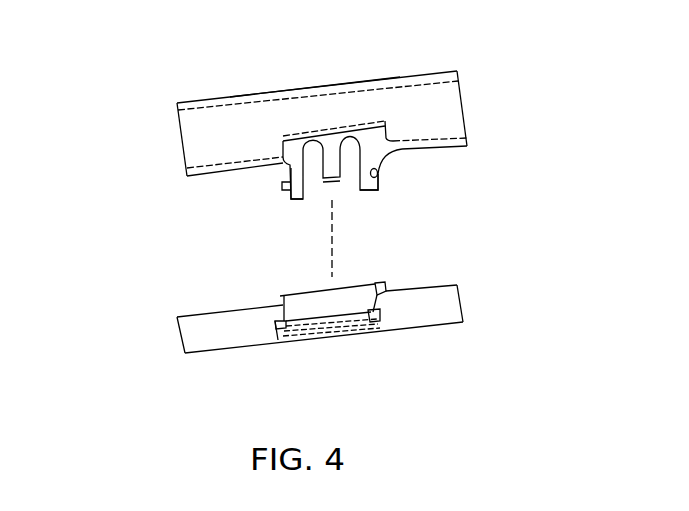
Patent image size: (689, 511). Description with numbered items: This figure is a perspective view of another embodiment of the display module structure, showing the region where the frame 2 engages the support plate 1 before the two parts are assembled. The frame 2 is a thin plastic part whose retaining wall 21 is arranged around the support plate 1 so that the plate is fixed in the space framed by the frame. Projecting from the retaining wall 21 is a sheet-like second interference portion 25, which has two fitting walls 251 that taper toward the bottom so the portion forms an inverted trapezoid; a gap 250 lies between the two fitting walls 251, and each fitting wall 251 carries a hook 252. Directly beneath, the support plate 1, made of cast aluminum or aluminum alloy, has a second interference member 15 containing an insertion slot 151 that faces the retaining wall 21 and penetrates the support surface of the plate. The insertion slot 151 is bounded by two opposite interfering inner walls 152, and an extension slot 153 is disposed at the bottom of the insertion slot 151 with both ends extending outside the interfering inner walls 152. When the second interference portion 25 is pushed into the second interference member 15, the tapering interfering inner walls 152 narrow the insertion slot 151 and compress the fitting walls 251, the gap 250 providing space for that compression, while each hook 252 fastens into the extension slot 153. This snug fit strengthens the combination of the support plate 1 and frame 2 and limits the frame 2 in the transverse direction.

The support plate 1 is at (461, 303).
The frame 2 is at (463, 90).
The second interference member 15 is at (70, 333).
The insertion slot 151 is at (303, 301).
The interfering inner walls 152 is at (283, 332).
The extension slot 153 is at (268, 336).
The retaining wall 21 is at (322, 110).
The second interference portion 25 is at (298, 145).
The gap 250 is at (347, 182).
The fitting walls 251 is at (282, 180).
The hook 252 is at (283, 196).